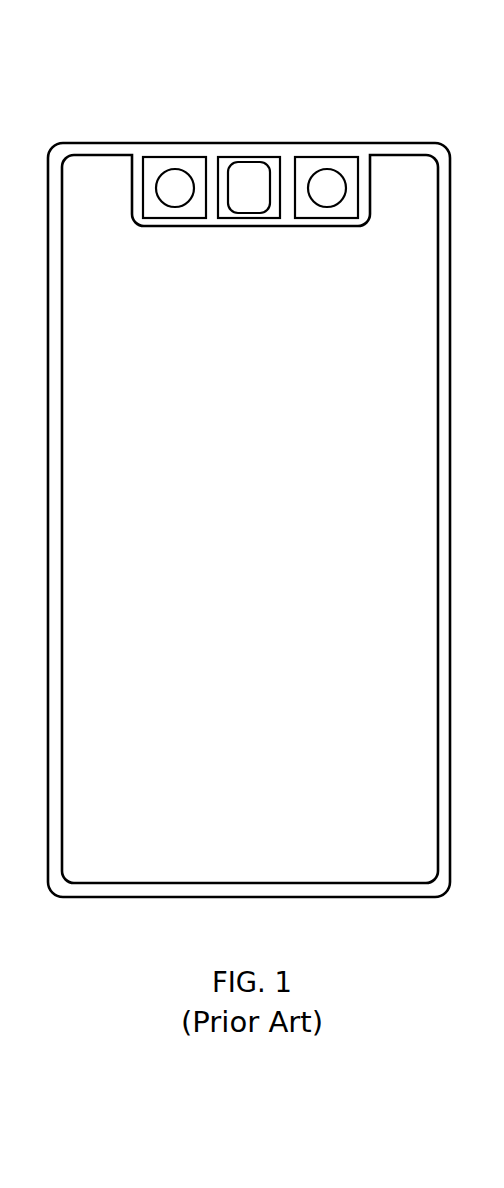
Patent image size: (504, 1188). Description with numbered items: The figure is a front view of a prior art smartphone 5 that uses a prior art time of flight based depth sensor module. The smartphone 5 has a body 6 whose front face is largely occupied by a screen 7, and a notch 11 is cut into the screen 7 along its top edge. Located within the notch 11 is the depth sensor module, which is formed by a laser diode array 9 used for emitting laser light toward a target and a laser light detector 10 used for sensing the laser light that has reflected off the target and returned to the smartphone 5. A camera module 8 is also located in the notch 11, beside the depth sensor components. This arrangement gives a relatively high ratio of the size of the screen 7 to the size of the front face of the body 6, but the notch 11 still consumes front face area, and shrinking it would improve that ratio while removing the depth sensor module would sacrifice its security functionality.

The smartphone 5 is at (249, 62).
The body 6 is at (93, 142).
The screen 7 is at (62, 208).
The camera module 8 is at (163, 157).
The laser diode array 9 is at (235, 156).
The laser light detector 10 is at (315, 156).
The notch 11 is at (366, 158).